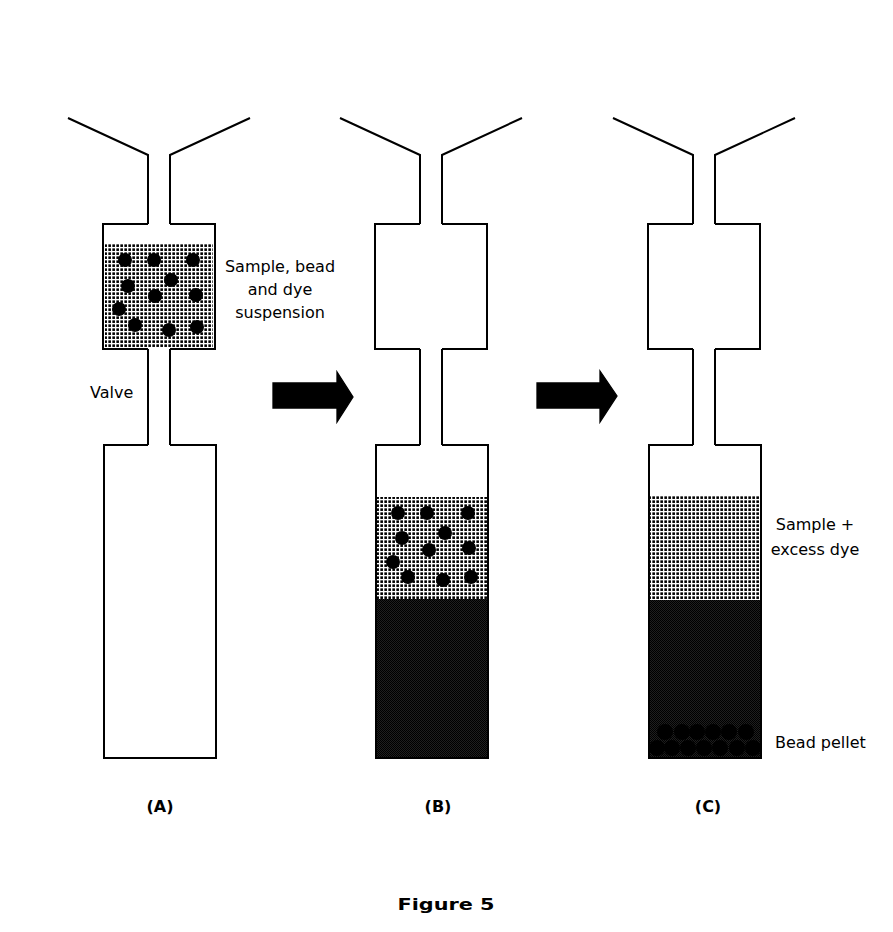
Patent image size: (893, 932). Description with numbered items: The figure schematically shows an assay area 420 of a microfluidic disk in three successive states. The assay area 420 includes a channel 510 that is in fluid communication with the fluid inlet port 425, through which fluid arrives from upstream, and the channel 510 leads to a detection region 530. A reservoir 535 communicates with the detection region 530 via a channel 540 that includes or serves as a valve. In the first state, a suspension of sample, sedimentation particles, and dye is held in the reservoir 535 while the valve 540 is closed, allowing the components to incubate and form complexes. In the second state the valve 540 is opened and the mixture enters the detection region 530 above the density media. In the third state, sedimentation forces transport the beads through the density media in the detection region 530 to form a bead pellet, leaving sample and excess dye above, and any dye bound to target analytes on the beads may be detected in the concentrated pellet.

The assay area 420 is at (83, 182).
The fluid inlet port 425 is at (104, 96).
The channel 510 is at (170, 180).
The reservoir 535 is at (103, 285).
The channel serving as a valve 540 is at (170, 388).
The detection region 530 is at (217, 555).